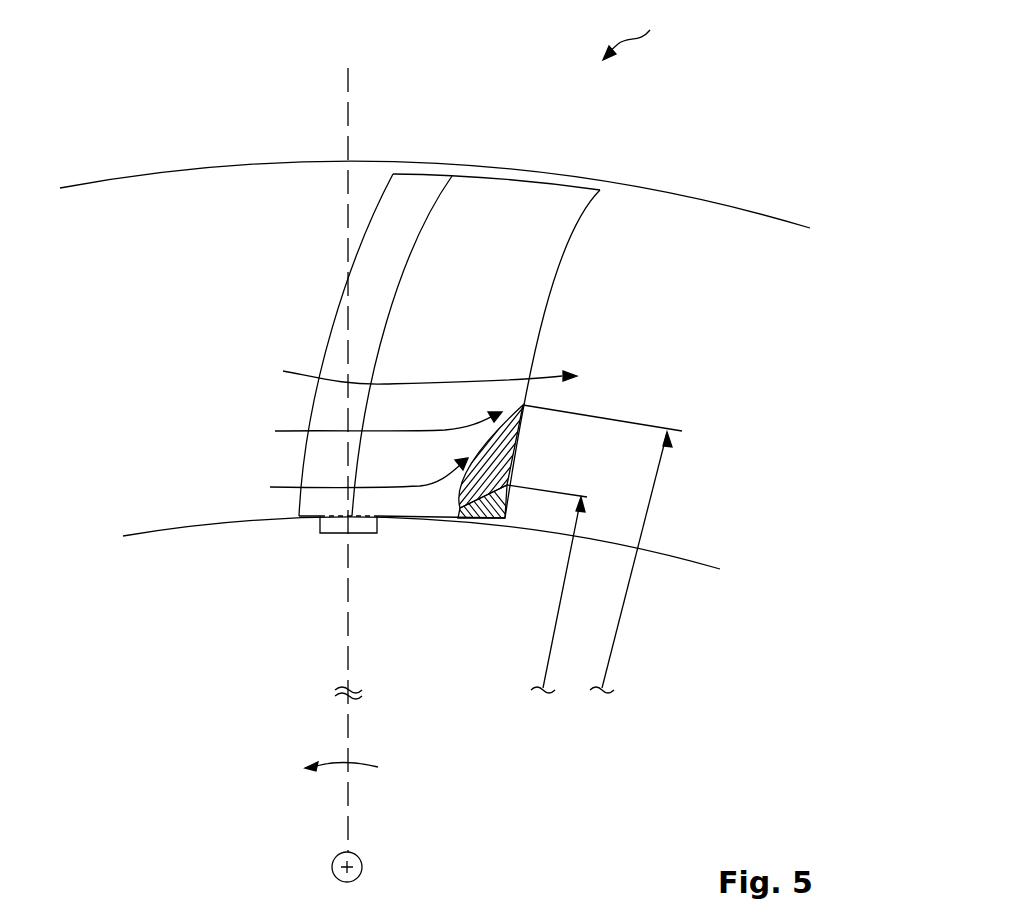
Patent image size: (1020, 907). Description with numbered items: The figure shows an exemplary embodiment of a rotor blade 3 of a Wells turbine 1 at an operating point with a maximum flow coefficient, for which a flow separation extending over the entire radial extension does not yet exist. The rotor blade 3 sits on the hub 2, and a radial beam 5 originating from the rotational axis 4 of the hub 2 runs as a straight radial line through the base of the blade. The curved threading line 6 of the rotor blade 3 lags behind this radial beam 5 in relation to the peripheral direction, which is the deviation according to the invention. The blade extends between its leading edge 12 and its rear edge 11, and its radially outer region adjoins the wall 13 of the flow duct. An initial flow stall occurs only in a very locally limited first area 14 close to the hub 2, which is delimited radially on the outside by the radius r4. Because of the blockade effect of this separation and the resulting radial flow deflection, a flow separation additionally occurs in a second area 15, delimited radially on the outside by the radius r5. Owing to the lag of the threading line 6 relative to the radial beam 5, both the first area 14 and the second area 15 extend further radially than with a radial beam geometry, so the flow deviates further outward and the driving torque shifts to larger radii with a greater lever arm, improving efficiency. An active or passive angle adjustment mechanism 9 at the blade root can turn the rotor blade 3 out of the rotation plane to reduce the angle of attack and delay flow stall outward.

The Wells turbine 1 is at (631, 31).
The hub 2 is at (164, 546).
The rotor blade 3 is at (325, 409).
The rotational axis 4 is at (352, 862).
The radial beam 5 is at (348, 106).
The threading line 6 is at (392, 300).
The angle adjustment mechanism 9 is at (363, 527).
The rear edge 11 is at (553, 305).
The leading edge 12 is at (300, 505).
The wall of the flow duct 13 is at (128, 182).
The first area 14 is at (488, 508).
The second area 15 is at (510, 456).
The radius r4 is at (580, 520).
The radius r5 is at (645, 532).